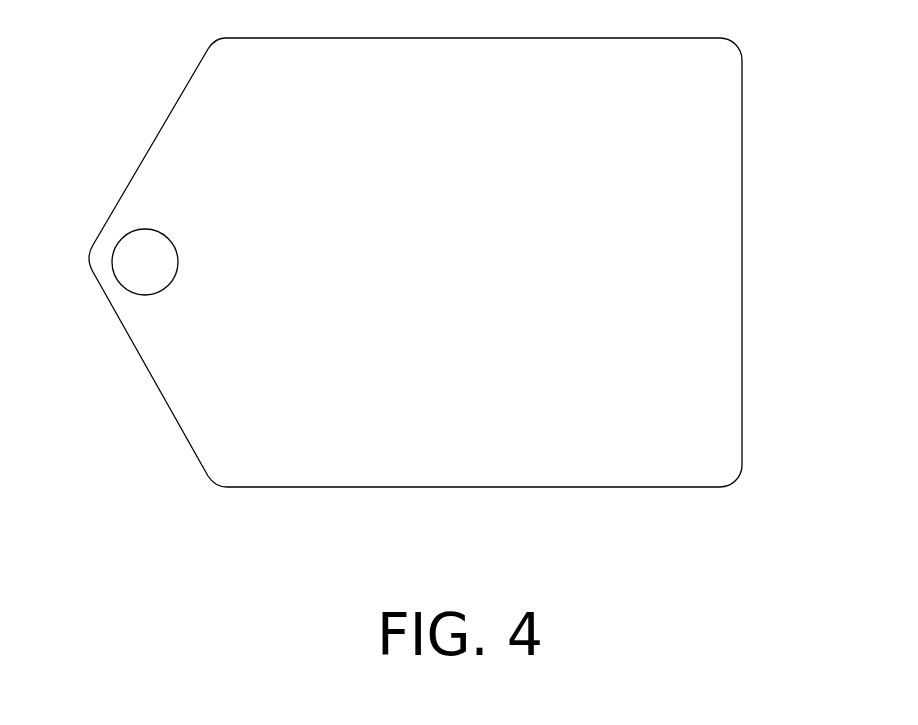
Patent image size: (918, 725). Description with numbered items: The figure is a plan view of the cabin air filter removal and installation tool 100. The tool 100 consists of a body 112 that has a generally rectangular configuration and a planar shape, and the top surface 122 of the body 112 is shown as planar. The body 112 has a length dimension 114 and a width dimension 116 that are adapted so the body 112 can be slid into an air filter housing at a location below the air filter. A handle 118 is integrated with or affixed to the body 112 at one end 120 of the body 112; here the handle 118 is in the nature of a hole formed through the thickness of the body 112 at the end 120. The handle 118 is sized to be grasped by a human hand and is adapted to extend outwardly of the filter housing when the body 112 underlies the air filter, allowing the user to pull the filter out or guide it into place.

The cabin air filter removal and installation tool 100 is at (762, 93).
The body 112 is at (718, 309).
The length dimension 114 is at (577, 487).
The width dimension 116 is at (742, 235).
The handle 118 is at (126, 233).
The end of the body 120 is at (173, 415).
The top surface 122 is at (453, 386).